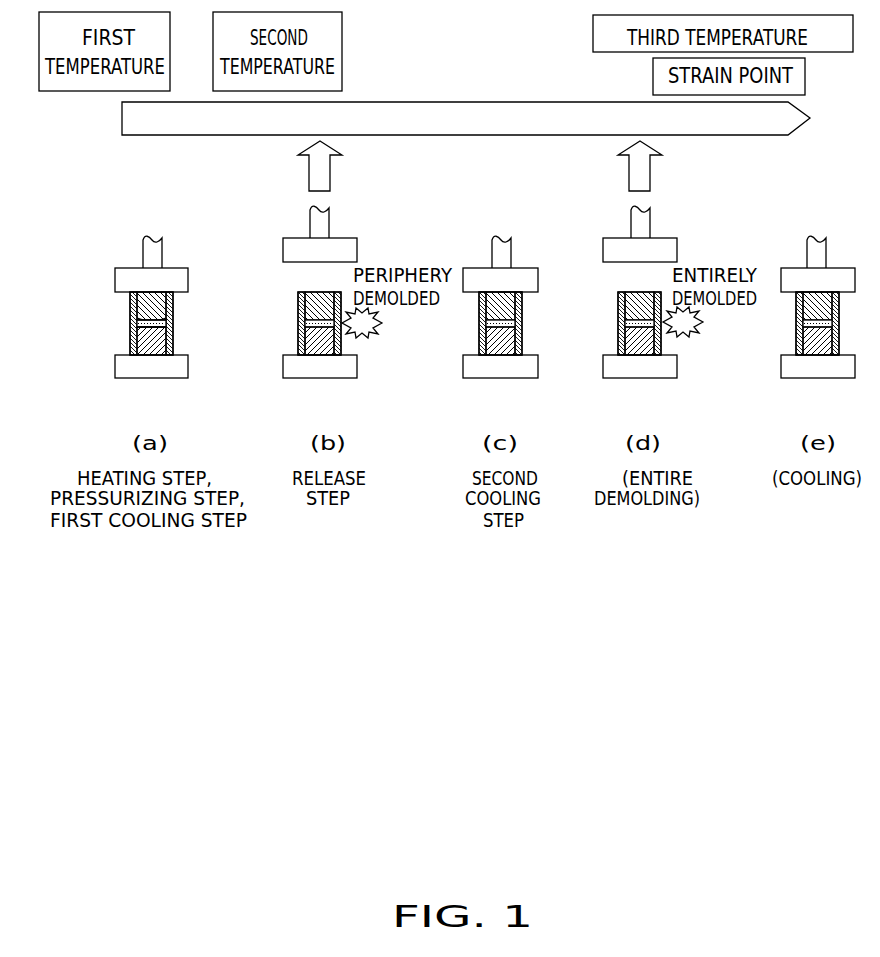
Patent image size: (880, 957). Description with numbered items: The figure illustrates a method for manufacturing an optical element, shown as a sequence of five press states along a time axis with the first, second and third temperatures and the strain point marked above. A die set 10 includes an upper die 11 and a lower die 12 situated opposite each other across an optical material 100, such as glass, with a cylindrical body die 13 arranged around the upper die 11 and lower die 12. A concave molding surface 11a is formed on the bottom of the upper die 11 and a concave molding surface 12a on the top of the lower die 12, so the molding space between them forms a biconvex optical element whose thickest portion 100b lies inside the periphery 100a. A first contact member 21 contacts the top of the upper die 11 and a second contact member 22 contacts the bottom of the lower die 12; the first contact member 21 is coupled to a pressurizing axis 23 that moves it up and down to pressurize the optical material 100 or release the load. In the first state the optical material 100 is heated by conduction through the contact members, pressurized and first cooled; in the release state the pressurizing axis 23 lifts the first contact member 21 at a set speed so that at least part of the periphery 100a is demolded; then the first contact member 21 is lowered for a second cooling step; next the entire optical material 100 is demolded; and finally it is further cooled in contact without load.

The die set 10 is at (139, 315).
The upper die 11 is at (150, 276).
The concave molding surface 11a is at (160, 300).
The lower die 12 is at (119, 363).
The concave molding surface 12a is at (152, 326).
The cylindrical body die 13 is at (173, 333).
The first contact member 21 is at (115, 276).
The second contact member 22 is at (115, 366).
The pressurizing axis 23 is at (143, 250).
The optical material 100 is at (139, 335).
The periphery 100a is at (170, 325).
The thickest portion 100b is at (172, 350).